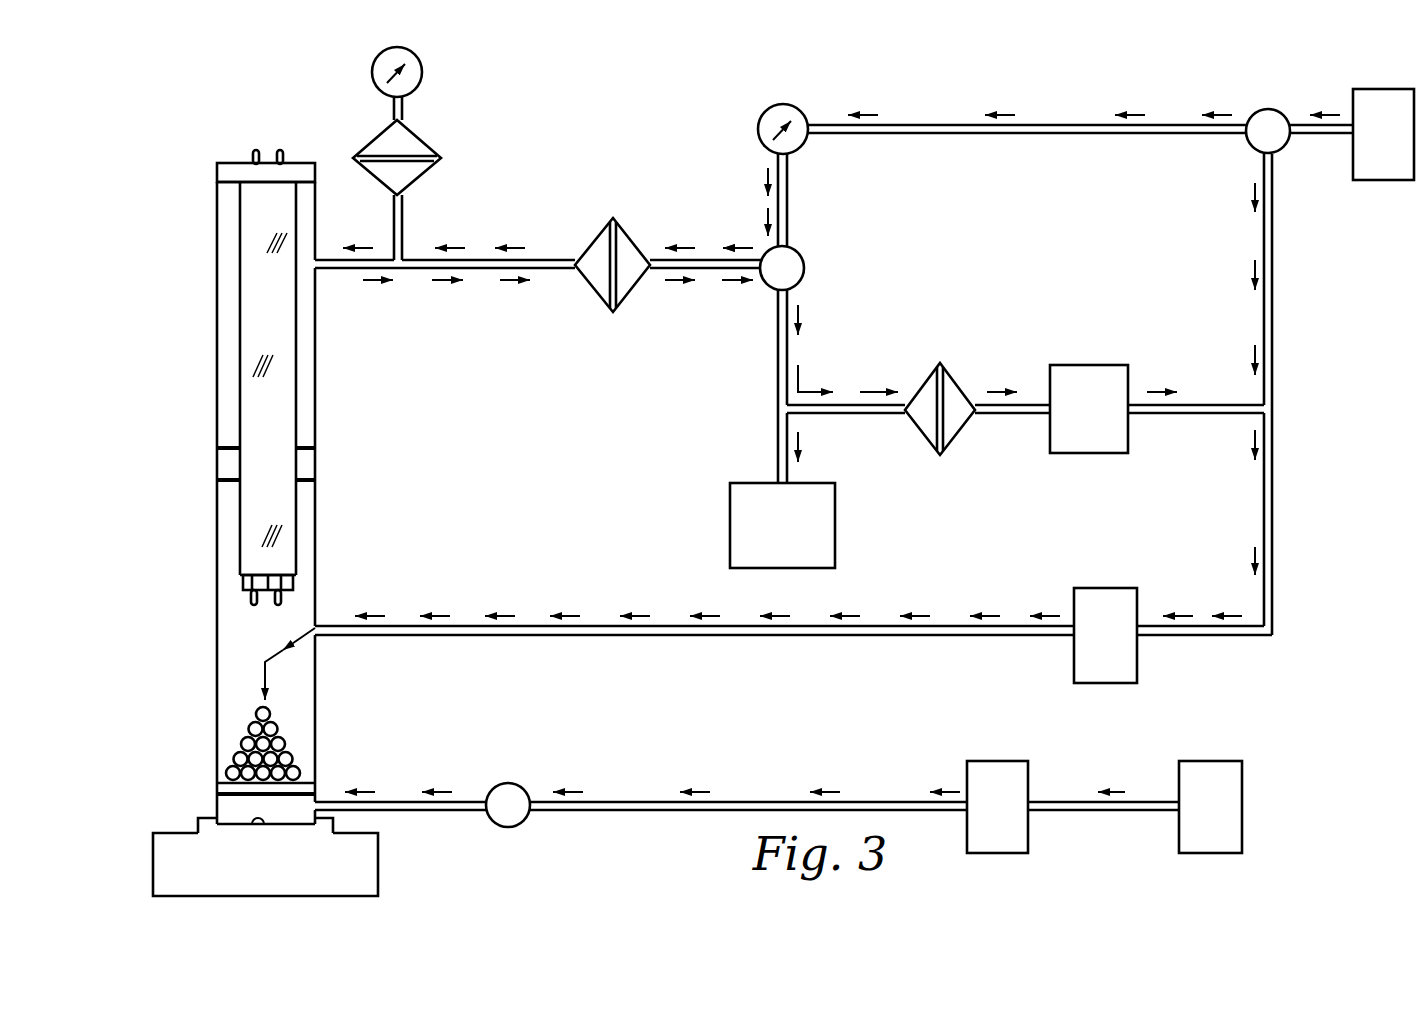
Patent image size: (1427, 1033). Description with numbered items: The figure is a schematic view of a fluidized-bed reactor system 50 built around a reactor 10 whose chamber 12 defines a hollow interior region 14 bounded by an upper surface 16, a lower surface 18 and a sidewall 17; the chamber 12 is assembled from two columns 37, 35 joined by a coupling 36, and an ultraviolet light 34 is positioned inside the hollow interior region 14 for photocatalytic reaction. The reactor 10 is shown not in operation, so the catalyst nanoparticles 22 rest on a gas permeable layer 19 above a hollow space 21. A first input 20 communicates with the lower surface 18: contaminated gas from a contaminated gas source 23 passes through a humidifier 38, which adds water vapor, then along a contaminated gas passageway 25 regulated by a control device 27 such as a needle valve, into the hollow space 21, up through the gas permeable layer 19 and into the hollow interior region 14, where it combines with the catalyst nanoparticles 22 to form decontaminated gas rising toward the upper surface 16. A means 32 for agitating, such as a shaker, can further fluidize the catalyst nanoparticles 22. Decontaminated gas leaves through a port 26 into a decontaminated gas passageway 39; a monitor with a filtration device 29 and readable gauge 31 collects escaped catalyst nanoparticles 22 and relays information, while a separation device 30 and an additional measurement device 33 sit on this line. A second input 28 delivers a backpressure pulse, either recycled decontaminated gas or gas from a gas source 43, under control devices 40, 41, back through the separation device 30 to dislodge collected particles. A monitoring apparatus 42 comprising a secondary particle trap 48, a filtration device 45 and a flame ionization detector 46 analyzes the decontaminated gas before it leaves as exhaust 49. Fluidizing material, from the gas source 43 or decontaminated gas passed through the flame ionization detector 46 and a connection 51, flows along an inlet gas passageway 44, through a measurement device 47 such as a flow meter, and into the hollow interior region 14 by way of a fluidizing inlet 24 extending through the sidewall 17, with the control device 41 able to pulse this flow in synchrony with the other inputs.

The reactor 10 is at (240, 103).
The chamber 12 is at (217, 232).
The hollow interior region 14 is at (227, 290).
The upper surface 16 is at (217, 172).
The sidewall 17 is at (315, 550).
The lower surface 18 is at (258, 818).
The gas permeable layer 19 is at (217, 790).
The first input 20 is at (754, 781).
The hollow space 21 is at (217, 805).
The catalyst nanoparticles 22 is at (284, 745).
The contaminated gas source 23 is at (1207, 761).
The fluidizing inlet 24 is at (310, 636).
The contaminated gas passageway 25 is at (397, 802).
The port 26 is at (315, 283).
The control device 27 is at (522, 785).
The second input 28 is at (677, 214).
The filtration device 29 is at (415, 140).
The separation device 30 is at (597, 234).
The readable gauge 31 is at (373, 84).
The means for agitating 32 is at (378, 890).
The measurement device 33 is at (758, 128).
The ultraviolet light 34 is at (296, 402).
The column 35 is at (217, 325).
The coupling 36 is at (312, 462).
The column 37 is at (217, 608).
The humidifier 38 is at (990, 761).
The decontaminated gas passageway 39 is at (488, 260).
The control device 40 is at (805, 270).
The control device 41 is at (1283, 114).
The monitoring apparatus 42 is at (972, 302).
The gas source 43 is at (1378, 180).
The inlet gas passageway 44 is at (470, 626).
The filtration device 45 is at (921, 376).
The flame ionization detector 46 is at (1105, 365).
The measurement device 47 is at (1098, 588).
The secondary particle trap 48 is at (730, 525).
The exhaust 49 is at (1160, 413).
The fluidized-bed reactor system 50 is at (1052, 83).
The connection 51 is at (1263, 410).